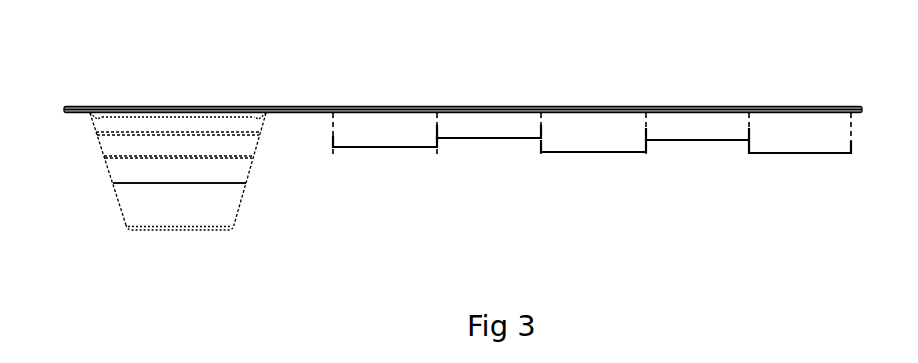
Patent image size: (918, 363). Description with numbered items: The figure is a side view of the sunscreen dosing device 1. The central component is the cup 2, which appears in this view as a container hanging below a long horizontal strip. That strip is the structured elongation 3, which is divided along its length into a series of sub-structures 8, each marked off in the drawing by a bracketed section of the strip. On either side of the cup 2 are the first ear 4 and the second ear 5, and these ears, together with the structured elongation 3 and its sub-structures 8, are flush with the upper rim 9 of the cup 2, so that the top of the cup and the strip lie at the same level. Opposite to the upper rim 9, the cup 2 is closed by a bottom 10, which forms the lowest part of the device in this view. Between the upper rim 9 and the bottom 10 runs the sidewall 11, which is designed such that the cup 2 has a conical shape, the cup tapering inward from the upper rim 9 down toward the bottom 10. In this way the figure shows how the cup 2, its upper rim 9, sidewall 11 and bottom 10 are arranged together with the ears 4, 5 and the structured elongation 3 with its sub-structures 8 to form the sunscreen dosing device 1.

The sunscreen dosing device 1 is at (445, 78).
The cup 2 is at (112, 180).
The structured elongation 3 is at (661, 105).
The first ear 4 is at (79, 95).
The second ear 5 is at (271, 94).
The sub-structures 8 is at (385, 147).
The upper rim 9 is at (168, 106).
The bottom 10 is at (163, 231).
The sidewall 11 is at (230, 178).